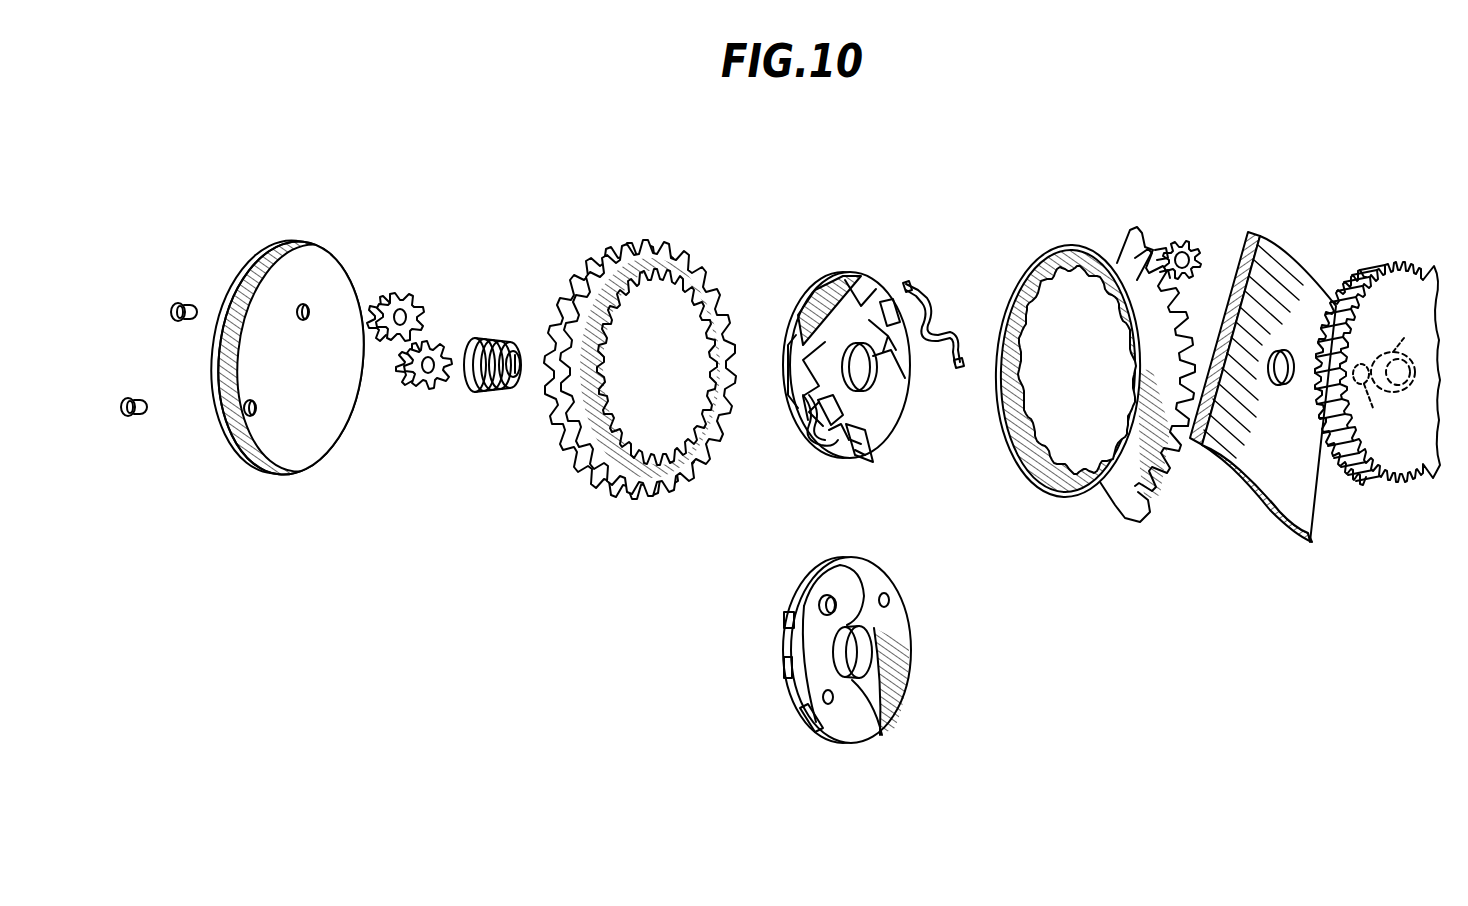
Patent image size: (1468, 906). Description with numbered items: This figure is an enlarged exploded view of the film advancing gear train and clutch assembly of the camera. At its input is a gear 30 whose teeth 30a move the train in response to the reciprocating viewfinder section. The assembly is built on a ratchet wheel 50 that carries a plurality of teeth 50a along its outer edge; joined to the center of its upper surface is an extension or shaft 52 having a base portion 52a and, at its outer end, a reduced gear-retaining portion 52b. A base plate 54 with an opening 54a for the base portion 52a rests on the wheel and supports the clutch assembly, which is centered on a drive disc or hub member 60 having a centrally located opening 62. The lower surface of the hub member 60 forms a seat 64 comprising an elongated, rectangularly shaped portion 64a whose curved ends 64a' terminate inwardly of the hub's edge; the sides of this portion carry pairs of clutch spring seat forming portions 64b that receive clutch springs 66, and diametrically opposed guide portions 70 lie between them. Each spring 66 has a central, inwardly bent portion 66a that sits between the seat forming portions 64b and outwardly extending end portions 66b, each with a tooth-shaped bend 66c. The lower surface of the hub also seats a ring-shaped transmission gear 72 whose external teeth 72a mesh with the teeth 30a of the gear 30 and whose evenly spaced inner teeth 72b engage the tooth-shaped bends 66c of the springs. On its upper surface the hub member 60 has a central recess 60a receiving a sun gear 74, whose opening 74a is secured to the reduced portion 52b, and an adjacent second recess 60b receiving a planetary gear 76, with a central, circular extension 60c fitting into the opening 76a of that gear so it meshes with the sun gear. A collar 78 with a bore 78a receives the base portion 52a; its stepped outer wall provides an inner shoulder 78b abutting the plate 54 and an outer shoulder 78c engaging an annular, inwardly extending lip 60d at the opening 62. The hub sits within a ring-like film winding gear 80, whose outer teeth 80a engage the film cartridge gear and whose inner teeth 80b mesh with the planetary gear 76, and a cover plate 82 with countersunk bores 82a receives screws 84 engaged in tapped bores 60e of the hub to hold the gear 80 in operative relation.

The gear 30 is at (1196, 230).
The teeth 30a is at (1178, 242).
The ratchet wheel 50 is at (1377, 343).
The teeth 50a is at (1423, 263).
The extension or shaft 52 is at (1396, 375).
The base portion 52a is at (1416, 333).
The reduced gear-retaining portion 52b is at (1382, 400).
The base plate 54 is at (1287, 388).
The opening 54a is at (1280, 386).
The drive disc or hub member 60 is at (858, 272).
The central recess 60a is at (898, 640).
The second recess 60b is at (807, 601).
The central, circular extension 60c is at (834, 602).
The annular, inwardly extending lip 60d is at (858, 692).
The tapped bores 60e is at (890, 600).
The centrally located opening 62 is at (873, 382).
The seat 64 is at (855, 360).
The elongated, rectangularly shaped portion 64a is at (886, 350).
The ends 64a' is at (879, 354).
The clutch spring seat forming portions 64b is at (883, 302).
The clutch springs 66 is at (903, 382).
The central, inwardly bent portion 66a is at (935, 326).
The outwardly extending end portions 66b is at (938, 306).
The tooth-shaped bend 66c is at (912, 285).
The guide portions 70 is at (903, 337).
The ring-shaped transmission gear 72 is at (1105, 375).
The external teeth 72a is at (1155, 502).
The inner teeth 72b is at (1130, 390).
The sun gear 74 is at (448, 378).
The opening 74a is at (433, 363).
The planetary gear 76 is at (426, 296).
The opening 76a is at (406, 318).
The collar 78 is at (513, 389).
The bore 78a is at (515, 368).
The inner shoulder 78b is at (480, 393).
The outer shoulder 78c is at (492, 341).
The ring-like film winding gear 80 is at (646, 347).
The outer teeth 80a is at (620, 248).
The inner teeth 80b is at (604, 362).
The cover plate 82 is at (295, 374).
The countersunk bores 82a is at (303, 322).
The screws 84 is at (172, 314).